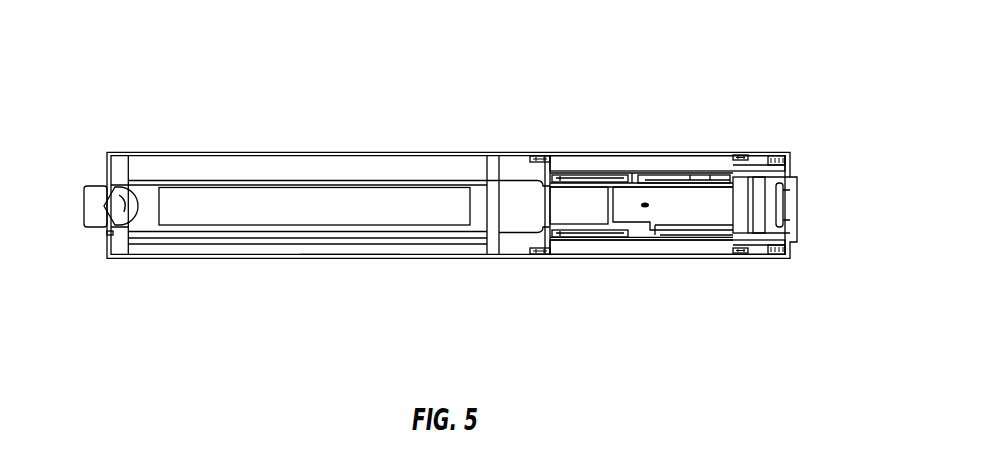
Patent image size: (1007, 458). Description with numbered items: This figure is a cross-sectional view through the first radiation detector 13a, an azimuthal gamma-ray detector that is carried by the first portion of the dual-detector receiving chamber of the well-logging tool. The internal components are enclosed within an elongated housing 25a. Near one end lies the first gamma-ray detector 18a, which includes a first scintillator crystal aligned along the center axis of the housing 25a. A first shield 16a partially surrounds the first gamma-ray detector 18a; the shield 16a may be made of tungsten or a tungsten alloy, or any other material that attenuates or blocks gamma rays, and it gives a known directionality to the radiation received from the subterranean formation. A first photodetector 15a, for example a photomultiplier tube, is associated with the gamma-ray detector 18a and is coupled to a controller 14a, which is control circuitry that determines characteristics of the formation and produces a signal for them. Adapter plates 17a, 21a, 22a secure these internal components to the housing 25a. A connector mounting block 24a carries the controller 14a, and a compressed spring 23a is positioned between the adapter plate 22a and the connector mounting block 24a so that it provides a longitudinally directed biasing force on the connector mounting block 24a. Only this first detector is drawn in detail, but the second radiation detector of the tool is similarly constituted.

The first radiation detector 13a is at (541, 55).
The controller 14a is at (593, 175).
The first photodetector 15a is at (511, 188).
The first shield 16a is at (228, 161).
The adapter plate 17a is at (118, 163).
The first gamma-ray detector 18a is at (238, 225).
The adapter plate 21a is at (493, 247).
The adapter plate 22a is at (797, 178).
The compressed spring 23a is at (757, 168).
The connector mounting block 24a is at (732, 178).
The housing 25a is at (372, 258).